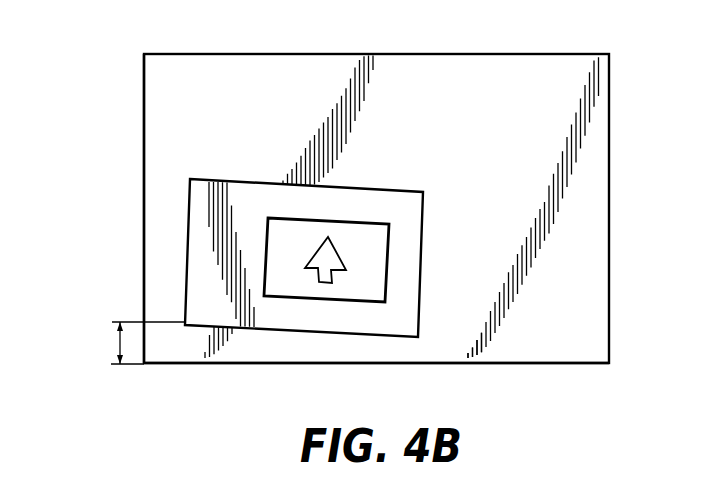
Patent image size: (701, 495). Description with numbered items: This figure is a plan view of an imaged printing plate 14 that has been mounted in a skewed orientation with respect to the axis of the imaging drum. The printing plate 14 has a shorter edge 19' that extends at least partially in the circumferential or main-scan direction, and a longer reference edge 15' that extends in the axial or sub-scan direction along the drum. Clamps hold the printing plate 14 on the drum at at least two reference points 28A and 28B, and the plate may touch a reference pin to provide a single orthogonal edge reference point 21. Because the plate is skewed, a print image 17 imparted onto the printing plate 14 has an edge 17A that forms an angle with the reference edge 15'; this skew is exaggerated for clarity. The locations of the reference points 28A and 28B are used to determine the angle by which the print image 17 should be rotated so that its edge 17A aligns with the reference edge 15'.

The printing plate 14 is at (157, 110).
The shorter edge 19' is at (100, 208).
The print image 17 is at (203, 258).
The edge of print image 17A is at (387, 338).
The reference point 28B is at (217, 364).
The reference edge 15' is at (376, 388).
The orthogonal edge reference point 21 is at (468, 362).
The reference point 28A is at (553, 364).